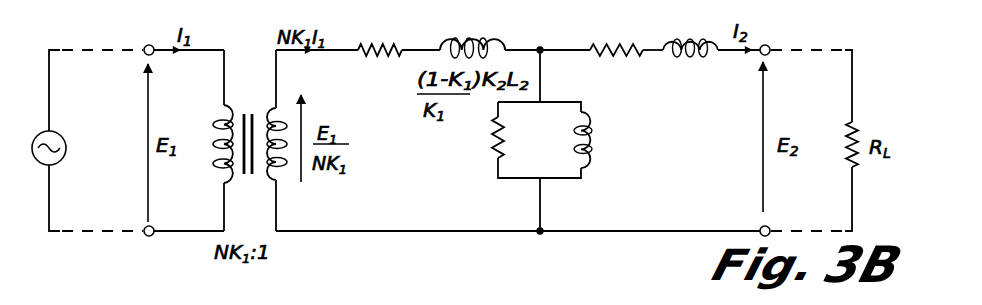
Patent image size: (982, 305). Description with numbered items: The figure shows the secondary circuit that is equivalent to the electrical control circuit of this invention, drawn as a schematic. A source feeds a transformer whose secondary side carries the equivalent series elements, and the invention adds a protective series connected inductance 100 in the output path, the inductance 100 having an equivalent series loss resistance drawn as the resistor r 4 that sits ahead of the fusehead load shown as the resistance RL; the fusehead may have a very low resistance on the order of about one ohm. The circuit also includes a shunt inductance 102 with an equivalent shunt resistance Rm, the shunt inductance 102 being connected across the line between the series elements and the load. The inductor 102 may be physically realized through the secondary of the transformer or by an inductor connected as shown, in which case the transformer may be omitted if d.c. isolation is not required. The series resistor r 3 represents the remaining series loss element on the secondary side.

The series impedance arm (r4 and (1-K2)L2) 100 is at (661, 51).
The shunt impedance arm (Rm in parallel with K2L2) 102 is at (575, 143).
The resistor r3 3 is at (373, 64).
The resistor r4 4 is at (611, 65).